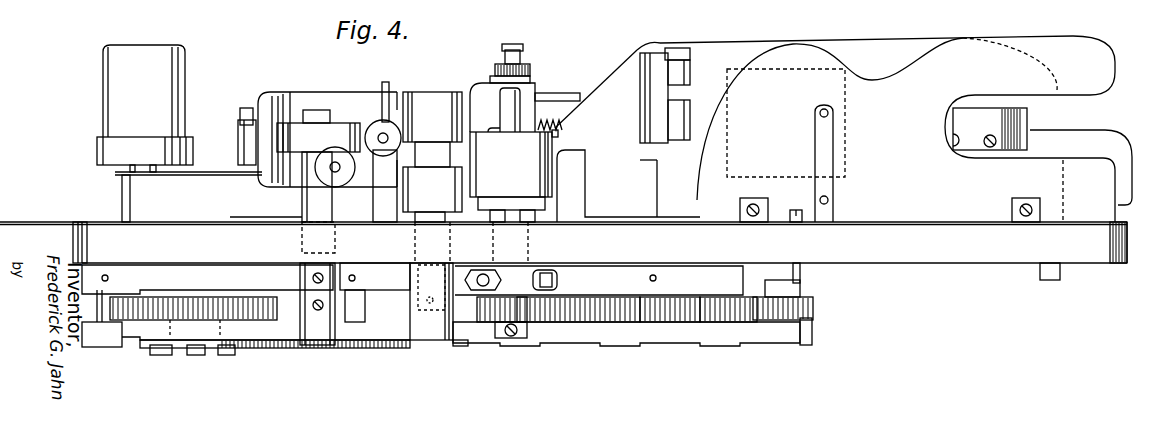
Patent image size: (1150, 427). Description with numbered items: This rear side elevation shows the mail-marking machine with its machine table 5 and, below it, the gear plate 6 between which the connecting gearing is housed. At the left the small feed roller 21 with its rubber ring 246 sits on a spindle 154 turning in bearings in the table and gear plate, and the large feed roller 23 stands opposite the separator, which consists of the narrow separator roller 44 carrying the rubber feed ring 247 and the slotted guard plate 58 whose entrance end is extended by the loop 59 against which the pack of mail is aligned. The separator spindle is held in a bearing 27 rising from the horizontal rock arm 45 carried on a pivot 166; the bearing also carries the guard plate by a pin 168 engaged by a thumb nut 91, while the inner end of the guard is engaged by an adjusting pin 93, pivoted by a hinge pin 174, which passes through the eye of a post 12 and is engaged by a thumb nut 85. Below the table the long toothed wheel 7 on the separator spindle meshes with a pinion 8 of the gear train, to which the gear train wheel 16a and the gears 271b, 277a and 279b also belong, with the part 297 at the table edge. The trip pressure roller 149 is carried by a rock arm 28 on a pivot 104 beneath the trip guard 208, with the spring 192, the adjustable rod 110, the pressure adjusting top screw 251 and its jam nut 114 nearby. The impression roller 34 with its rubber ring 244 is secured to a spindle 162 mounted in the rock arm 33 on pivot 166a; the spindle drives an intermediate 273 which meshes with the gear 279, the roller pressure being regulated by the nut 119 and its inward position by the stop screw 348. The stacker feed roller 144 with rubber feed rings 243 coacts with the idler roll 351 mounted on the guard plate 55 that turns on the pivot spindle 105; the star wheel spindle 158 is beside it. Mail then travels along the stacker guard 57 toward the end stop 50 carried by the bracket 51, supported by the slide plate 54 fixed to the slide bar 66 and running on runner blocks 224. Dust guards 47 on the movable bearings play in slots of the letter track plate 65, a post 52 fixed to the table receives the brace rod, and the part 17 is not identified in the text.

The machine table 5 is at (563, 242).
The gear plate 6 is at (612, 333).
The long gear toothed wheel 7 is at (318, 102).
The pinion 8 is at (198, 356).
The post 12 is at (378, 233).
The gear 16a is at (244, 300).
The support shelf 17 is at (172, 176).
The small feed roller 21 is at (144, 91).
The large feed roller 23 is at (240, 110).
The separator spindle-bearing 27 is at (300, 201).
The rock arm 28 is at (390, 290).
The rock arm 33 is at (632, 282).
The impression roller 34 is at (558, 135).
The separator roller 44 is at (338, 123).
The rock arm 45 is at (199, 292).
The dust guards 47 is at (403, 242).
The end stop 50 is at (1000, 125).
The bracket 51 is at (1081, 167).
The post 52 is at (1050, 280).
The slide plate 54 is at (877, 119).
The guard plate 55 is at (627, 132).
The stacker guard plate 57 is at (861, 43).
The separator guard plate 58 is at (288, 92).
The loop 59 is at (262, 98).
The letter track plate 65 is at (682, 214).
The slide bar 66 is at (836, 212).
The thumb nut 85 is at (383, 138).
The thumb nut 91 is at (340, 178).
The adjusting pin 93 is at (382, 145).
The pivot 104 is at (365, 308).
The pivot spindle 105 is at (588, 218).
The adjustable rod 110 is at (570, 95).
The jam nut 114 is at (528, 64).
The pressure regulating nut 119 is at (480, 270).
The stacker feed roller 144 is at (690, 58).
The trip pressure roller 149 is at (432, 157).
The spindle 154 is at (128, 170).
The spindle 158 is at (802, 272).
The spindle 162 is at (502, 105).
The pivot 166 is at (102, 318).
The pivot 166a is at (664, 297).
The pin 168 is at (330, 176).
The hinge pin 174 is at (389, 86).
The coiled spring 192 is at (550, 117).
The trip guard 208 is at (476, 92).
The runner blocks 224 is at (760, 206).
The rubber feed rings 243 is at (690, 82).
The rubber ring 244 is at (511, 177).
The rubber ring 246 is at (145, 151).
The rubber feed ring 247 is at (238, 138).
The pressure adjusting top screw 251 is at (520, 44).
The gear 271b is at (815, 307).
The intermediate gear 273 is at (572, 323).
The gear 277a is at (495, 323).
The gear 279 is at (663, 323).
The gear 279b is at (735, 323).
The bar 297 is at (78, 221).
The stop screw 348 is at (548, 268).
The stacker idler roller 351 is at (640, 104).